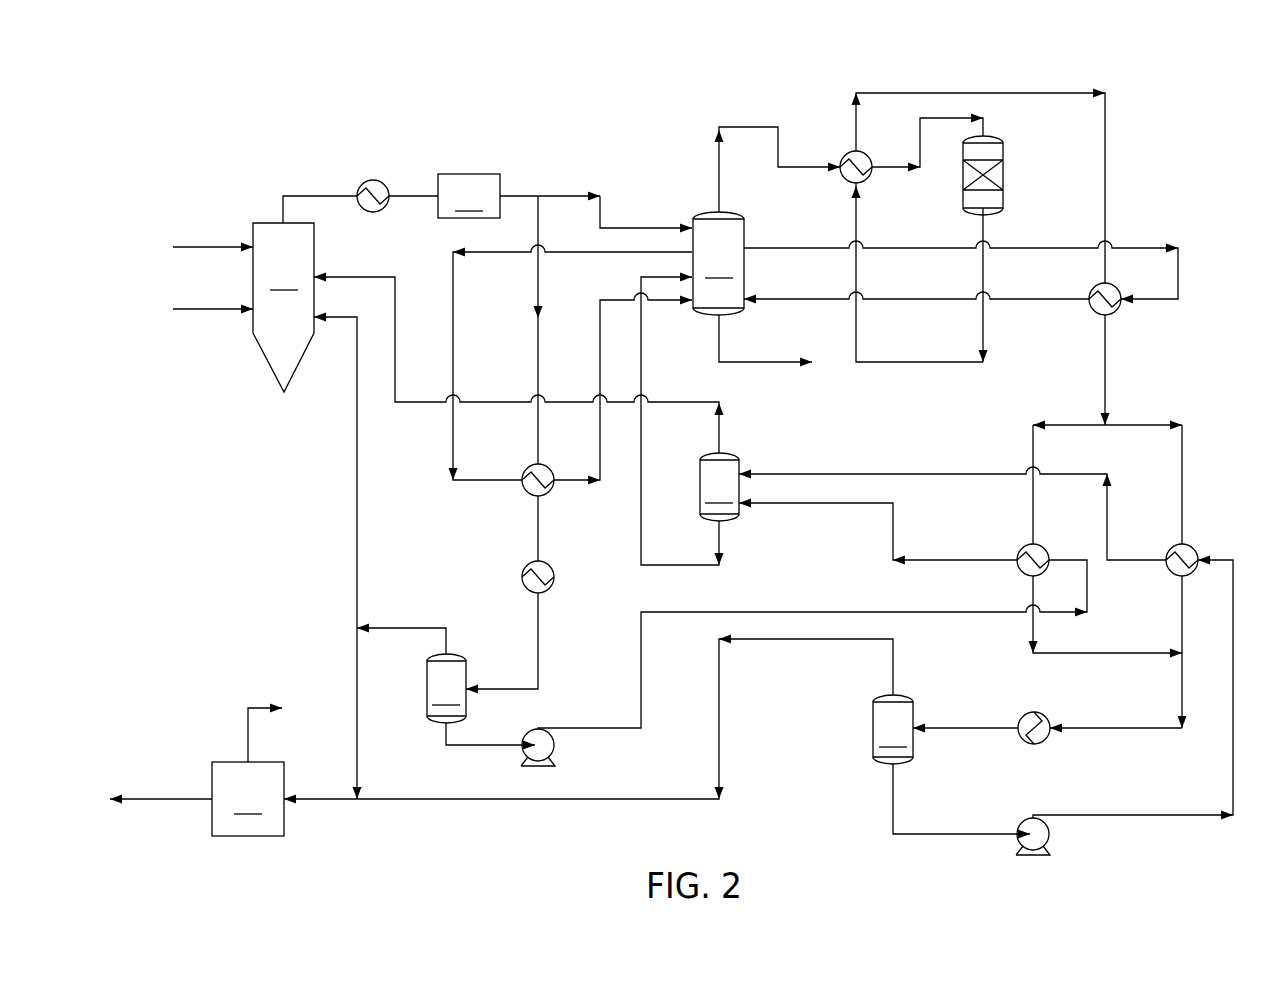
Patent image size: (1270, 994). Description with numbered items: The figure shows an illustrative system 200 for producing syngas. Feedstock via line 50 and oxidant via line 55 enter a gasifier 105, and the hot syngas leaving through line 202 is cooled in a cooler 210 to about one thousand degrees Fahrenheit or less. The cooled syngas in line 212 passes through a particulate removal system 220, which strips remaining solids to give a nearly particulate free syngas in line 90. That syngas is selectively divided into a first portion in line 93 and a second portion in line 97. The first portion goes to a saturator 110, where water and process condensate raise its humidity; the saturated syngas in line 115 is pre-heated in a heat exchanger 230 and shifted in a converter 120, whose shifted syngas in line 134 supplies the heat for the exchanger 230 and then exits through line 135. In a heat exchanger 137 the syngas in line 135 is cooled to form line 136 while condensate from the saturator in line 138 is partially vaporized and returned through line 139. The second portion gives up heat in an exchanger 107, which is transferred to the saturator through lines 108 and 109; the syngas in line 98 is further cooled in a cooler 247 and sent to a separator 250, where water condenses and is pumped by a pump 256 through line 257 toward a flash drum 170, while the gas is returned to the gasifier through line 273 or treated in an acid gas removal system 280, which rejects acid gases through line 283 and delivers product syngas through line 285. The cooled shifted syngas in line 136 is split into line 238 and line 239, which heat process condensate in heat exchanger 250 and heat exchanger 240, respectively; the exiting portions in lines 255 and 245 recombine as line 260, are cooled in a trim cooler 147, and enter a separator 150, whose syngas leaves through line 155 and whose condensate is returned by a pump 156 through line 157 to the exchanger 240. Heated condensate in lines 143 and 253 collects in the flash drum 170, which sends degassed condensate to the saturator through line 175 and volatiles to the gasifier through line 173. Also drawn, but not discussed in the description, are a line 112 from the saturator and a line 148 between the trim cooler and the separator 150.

The system 200 is at (1210, 118).
The line 50 is at (193, 246).
The line 55 is at (193, 310).
The gasifier 105 is at (283, 307).
The line 202 is at (313, 194).
The cooler 210 is at (370, 179).
The line 212 is at (411, 194).
The particulate removal system 220 is at (469, 196).
The line 90 is at (518, 194).
The line 93 is at (568, 194).
The line 97 is at (536, 285).
The line 108 is at (455, 336).
The exchanger 107 is at (523, 471).
The line 109 is at (598, 353).
The line 98 is at (541, 523).
The cooler 247 is at (522, 576).
The separator / heat exchanger 250 is at (1019, 553).
The line 273 is at (398, 625).
The pump 256 is at (556, 750).
The line 257 is at (779, 608).
The saturator 110 is at (718, 263).
The line 115 is at (748, 122).
The heat exchanger 230 is at (845, 182).
The line 135 is at (1043, 90).
The converter 120 is at (1005, 170).
The line 134 is at (928, 365).
The bottoms line 112 is at (769, 365).
The line 138 is at (1038, 245).
The heat exchanger 137 is at (1120, 308).
The line 139 is at (1057, 303).
The line 136 is at (1108, 373).
The line 238 is at (1031, 436).
The line 239 is at (1180, 448).
The flash drum 170 is at (719, 487).
The line 173 is at (674, 398).
The line 175 is at (669, 563).
The line 143 is at (836, 470).
The line 253 is at (847, 506).
The heat exchanger 240 is at (1196, 548).
The line 245 is at (1180, 600).
The line 255 is at (1109, 657).
The line 260 is at (1119, 735).
The trim cooler 147 is at (1024, 715).
The line 148 is at (959, 735).
The separator 150 is at (893, 729).
The line 155 is at (805, 643).
The pump 156 is at (1040, 858).
The line 157 is at (1142, 820).
The acid gas removal system 280 is at (287, 575).
The line 283 is at (246, 722).
The line 285 is at (151, 803).